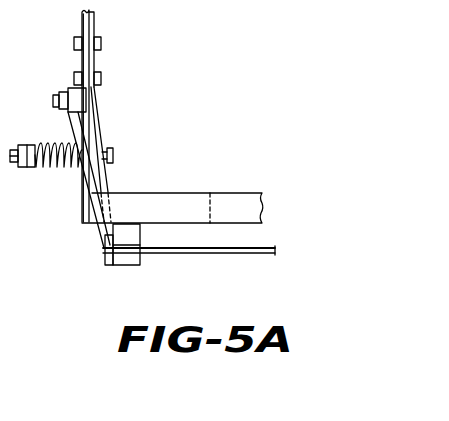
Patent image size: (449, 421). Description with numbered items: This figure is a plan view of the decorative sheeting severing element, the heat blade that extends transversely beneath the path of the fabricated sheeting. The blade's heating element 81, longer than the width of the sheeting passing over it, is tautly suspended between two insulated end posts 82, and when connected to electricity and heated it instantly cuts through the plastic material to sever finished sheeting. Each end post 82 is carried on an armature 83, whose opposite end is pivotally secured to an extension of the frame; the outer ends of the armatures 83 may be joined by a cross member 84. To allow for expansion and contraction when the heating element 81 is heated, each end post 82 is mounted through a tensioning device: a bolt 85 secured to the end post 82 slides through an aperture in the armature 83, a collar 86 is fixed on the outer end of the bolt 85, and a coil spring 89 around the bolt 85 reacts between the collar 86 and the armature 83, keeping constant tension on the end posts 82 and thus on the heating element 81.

The heating element 81 is at (228, 255).
The insulated end post 82 is at (128, 266).
The armature 83 is at (91, 21).
The cross member 84 is at (240, 172).
The bolt 85 is at (114, 155).
The collar 86 is at (50, 124).
The coil spring 89 is at (43, 168).